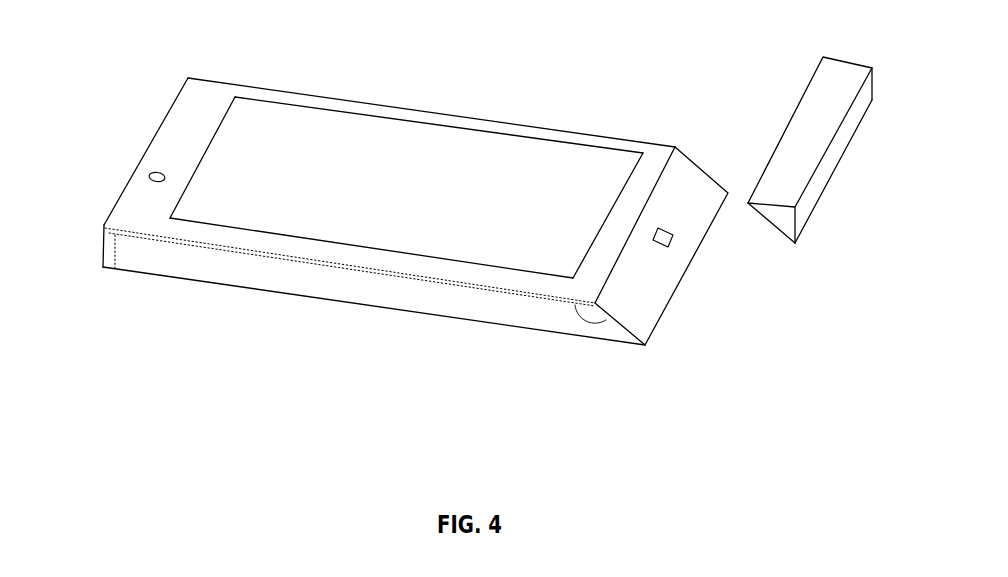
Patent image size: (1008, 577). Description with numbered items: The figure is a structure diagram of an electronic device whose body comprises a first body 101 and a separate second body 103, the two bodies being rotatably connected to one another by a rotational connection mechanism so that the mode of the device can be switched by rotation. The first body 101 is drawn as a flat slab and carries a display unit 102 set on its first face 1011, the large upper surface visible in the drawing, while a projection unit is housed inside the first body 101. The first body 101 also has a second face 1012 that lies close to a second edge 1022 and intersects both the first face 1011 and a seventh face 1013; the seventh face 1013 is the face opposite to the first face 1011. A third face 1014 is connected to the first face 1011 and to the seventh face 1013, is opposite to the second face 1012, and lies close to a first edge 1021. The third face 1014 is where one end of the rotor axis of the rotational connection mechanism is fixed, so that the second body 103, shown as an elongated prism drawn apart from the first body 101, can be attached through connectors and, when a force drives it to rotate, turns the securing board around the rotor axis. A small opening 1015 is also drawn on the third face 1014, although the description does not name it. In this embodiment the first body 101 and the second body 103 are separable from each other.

The first body 101 is at (352, 275).
The first face 1011 is at (202, 103).
The second face 1012 is at (147, 150).
The seventh face 1013 is at (287, 295).
The third face 1014 is at (638, 303).
The connector opening 1015 is at (668, 245).
The display unit 102 is at (308, 203).
The first edge 1021 is at (627, 182).
The second edge 1022 is at (175, 205).
The second body 103 is at (780, 222).